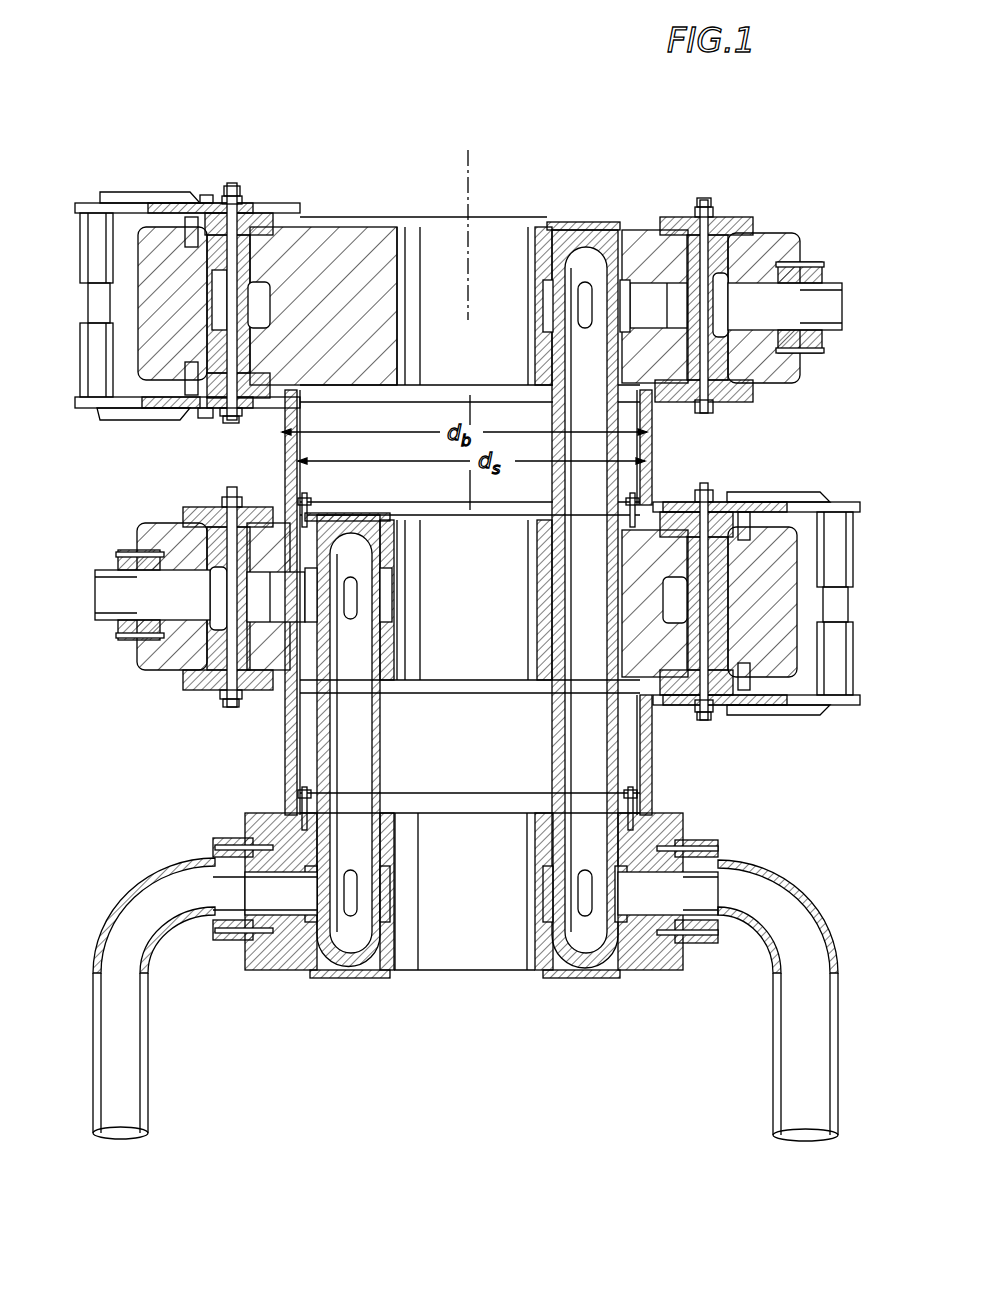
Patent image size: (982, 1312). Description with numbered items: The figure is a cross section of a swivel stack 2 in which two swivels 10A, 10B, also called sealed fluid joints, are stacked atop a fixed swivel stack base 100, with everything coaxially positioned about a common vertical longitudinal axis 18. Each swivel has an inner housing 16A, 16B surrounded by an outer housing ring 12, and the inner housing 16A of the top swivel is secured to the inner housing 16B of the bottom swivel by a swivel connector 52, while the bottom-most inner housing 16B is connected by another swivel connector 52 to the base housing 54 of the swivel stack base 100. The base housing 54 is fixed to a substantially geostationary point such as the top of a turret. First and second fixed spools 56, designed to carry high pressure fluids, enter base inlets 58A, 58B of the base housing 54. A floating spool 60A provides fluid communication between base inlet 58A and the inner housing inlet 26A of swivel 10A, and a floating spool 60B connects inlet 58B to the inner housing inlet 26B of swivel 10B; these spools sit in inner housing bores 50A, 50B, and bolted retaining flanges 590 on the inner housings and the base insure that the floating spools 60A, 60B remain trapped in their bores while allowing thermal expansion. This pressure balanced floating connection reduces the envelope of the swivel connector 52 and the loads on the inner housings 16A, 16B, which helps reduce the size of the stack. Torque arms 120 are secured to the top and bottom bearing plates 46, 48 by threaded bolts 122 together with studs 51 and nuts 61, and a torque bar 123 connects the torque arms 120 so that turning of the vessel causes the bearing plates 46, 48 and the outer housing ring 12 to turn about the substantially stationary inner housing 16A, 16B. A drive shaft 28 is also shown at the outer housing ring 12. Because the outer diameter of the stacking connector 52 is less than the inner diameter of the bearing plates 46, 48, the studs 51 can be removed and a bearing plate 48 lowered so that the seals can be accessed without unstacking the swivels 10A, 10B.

The rotary vane pump 2 is at (100, 745).
The swivel 10A is at (105, 493).
The swivel 10B is at (112, 645).
The outer housing ring 12 is at (165, 245).
The inner housing 16A is at (657, 235).
The inner housing 16B is at (660, 530).
The longitudinal axis 18 is at (478, 152).
The inner housing inlet 26A is at (640, 290).
The inner housing inlet 26B is at (287, 603).
The drive shaft 28 is at (783, 312).
The top bearing plate 46 is at (262, 218).
The bottom bearing plate 48 is at (753, 390).
The inner housing bore 50A is at (553, 350).
The inner housing bore 50B is at (385, 658).
The stud 51 is at (727, 402).
The swivel connector 52 is at (653, 440).
The base housing 54 is at (672, 818).
The fixed spool 56 is at (778, 902).
The base inlet 58A is at (660, 890).
The base inlet 58B is at (278, 900).
The floating spool 60A is at (553, 755).
The floating spool 60B is at (380, 748).
The nut 61 is at (706, 412).
The swivel stack base 100 is at (738, 802).
The torque arm 120 is at (135, 203).
The threaded bolt 122 is at (207, 196).
The torque bar 123 is at (90, 390).
The retaining flange 590 is at (565, 222).